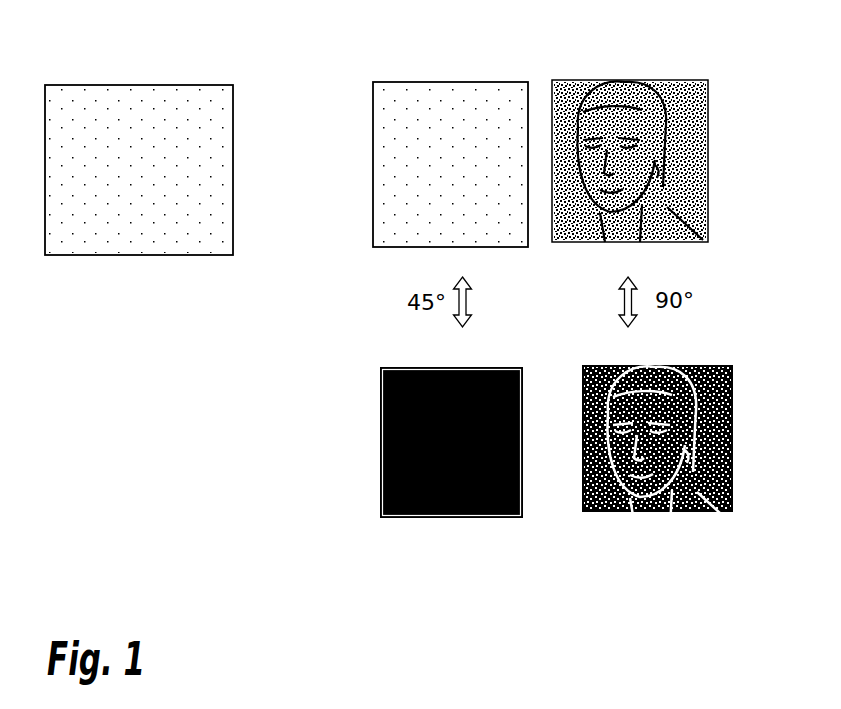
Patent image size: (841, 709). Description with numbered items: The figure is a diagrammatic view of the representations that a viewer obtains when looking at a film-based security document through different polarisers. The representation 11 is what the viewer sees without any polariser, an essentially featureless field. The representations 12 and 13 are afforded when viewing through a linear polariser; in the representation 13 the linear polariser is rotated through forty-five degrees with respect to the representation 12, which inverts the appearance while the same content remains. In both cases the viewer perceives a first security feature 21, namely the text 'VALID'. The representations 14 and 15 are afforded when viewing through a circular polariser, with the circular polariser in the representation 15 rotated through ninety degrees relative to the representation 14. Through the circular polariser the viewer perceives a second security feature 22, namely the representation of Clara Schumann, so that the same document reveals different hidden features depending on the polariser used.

The representation 11 is at (172, 95).
The representation 12 is at (455, 92).
The representation 13 is at (463, 367).
The representation 14 is at (653, 81).
The representation 15 is at (648, 365).
The first security feature 21 is at (392, 155).
The second security feature 22 is at (680, 90).